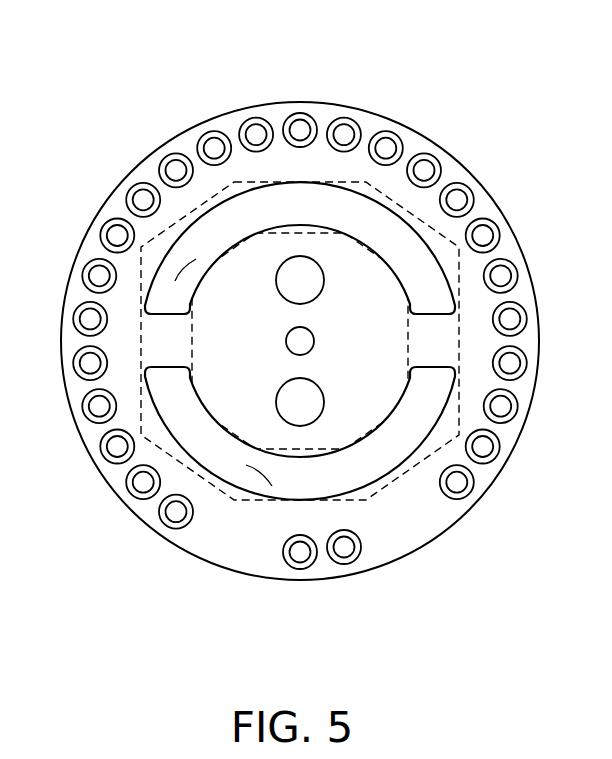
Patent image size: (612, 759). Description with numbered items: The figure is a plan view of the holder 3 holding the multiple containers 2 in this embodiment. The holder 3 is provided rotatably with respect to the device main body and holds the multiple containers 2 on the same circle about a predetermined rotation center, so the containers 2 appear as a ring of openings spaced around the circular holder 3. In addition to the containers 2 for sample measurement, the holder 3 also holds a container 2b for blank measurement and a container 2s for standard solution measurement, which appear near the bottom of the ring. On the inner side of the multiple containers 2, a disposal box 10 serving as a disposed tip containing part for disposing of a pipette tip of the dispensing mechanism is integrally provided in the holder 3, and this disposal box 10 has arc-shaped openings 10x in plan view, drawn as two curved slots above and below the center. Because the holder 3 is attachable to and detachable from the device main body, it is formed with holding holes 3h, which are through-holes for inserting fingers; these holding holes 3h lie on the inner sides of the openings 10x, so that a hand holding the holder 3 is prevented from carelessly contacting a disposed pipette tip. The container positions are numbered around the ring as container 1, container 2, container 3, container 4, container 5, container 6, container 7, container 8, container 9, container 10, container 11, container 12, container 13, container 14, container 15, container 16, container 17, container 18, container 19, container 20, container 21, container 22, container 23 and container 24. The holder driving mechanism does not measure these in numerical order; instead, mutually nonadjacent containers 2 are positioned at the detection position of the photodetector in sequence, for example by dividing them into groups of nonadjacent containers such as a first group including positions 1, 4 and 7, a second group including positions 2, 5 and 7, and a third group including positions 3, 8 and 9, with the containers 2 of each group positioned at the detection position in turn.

The containers 2 is at (511, 153).
The container for standard solution measurement 2s is at (301, 569).
The container for blank measurement 2b is at (345, 564).
The holder 3 is at (296, 102).
The holding holes 3h is at (324, 281).
The disposal box 10 is at (225, 598).
The arc-shaped openings 10x is at (245, 180).
The container number 1 is at (450, 474).
The container number 4 is at (499, 363).
The container number 5 is at (499, 319).
The container number 6 is at (490, 277).
The container number 7 is at (472, 243).
The container number 8 is at (450, 207).
The container number 9 is at (420, 180).
The container number 11 is at (343, 148).
The container number 12 is at (300, 143).
The container number 13 is at (256, 148).
The container number 14 is at (218, 160).
The container number 15 is at (183, 180).
The container number 16 is at (152, 207).
The container number 17 is at (128, 241).
The container number 18 is at (112, 277).
The container number 19 is at (104, 319).
The container number 20 is at (104, 363).
The container number 21 is at (112, 404).
The container number 22 is at (128, 441).
The container number 23 is at (152, 474).
The container number 24 is at (183, 501).